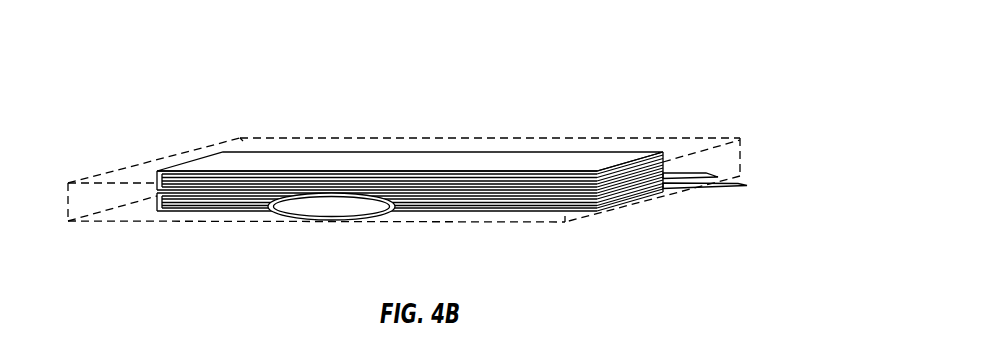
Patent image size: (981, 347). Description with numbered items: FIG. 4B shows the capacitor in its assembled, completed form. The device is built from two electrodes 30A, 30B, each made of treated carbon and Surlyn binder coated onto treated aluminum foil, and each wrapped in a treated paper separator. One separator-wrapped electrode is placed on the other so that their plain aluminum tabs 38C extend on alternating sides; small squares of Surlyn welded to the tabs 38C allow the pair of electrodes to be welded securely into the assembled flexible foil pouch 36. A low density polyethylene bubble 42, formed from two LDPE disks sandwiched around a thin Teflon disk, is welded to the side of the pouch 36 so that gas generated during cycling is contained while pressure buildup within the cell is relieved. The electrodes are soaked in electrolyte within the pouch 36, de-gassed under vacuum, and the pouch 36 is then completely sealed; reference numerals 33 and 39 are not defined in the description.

The electrolyte 33 is at (97, 200).
The flexible foil pouch 36 is at (122, 252).
The electrode 30A is at (588, 158).
The electrode 30B is at (210, 212).
The low density polyethylene bubble 42 is at (330, 225).
The plain aluminum tabs 38C is at (695, 171).
The tab separator/seal 39 is at (672, 188).